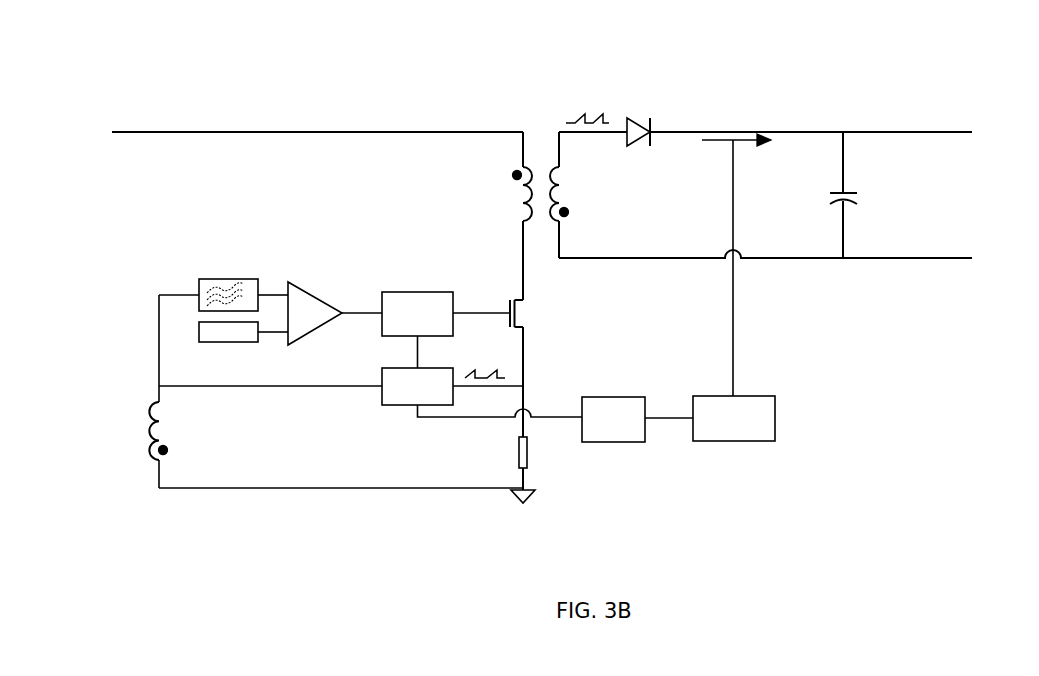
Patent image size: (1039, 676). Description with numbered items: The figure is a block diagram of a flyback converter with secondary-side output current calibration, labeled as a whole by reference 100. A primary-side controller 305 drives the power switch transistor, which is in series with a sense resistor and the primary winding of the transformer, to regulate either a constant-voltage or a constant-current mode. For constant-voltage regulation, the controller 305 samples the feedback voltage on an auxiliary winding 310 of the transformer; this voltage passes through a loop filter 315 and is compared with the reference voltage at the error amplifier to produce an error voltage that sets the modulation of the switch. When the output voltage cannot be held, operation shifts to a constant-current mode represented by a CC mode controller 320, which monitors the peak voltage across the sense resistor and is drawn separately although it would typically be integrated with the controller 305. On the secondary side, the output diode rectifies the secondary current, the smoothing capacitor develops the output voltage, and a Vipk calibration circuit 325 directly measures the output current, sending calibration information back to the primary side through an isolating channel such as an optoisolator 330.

The power converter system 100 is at (557, 15).
The primary-side controller 305 is at (430, 290).
The auxiliary winding 310 is at (152, 405).
The loop filter 315 is at (221, 279).
The CC mode controller 320 is at (395, 407).
The Vipk calibration circuit 325 is at (740, 442).
The optoisolator 330 is at (596, 397).